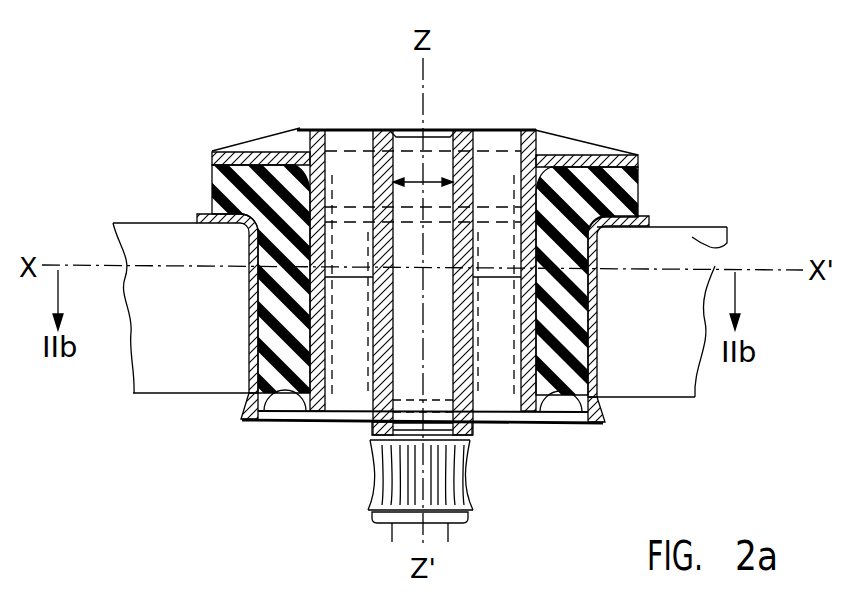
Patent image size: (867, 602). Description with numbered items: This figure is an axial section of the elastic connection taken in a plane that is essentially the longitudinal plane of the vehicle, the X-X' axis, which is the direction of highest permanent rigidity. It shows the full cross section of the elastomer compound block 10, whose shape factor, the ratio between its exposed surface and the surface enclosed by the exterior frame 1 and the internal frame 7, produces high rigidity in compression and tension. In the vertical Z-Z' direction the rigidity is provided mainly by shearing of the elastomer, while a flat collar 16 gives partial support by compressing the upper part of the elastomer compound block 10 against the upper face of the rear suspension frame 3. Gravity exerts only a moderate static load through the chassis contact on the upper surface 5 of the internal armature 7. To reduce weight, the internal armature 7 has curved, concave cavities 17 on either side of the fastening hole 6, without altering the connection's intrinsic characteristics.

The exterior frame 1 is at (250, 293).
The rear suspension frame 3 is at (715, 266).
The upper surface 5 is at (355, 122).
The fastening hole 6 is at (431, 150).
The internal armature 7 is at (303, 148).
The elastomer compound block 10 is at (275, 348).
The flat collar 16 is at (648, 207).
The concave cavities 17 is at (343, 370).